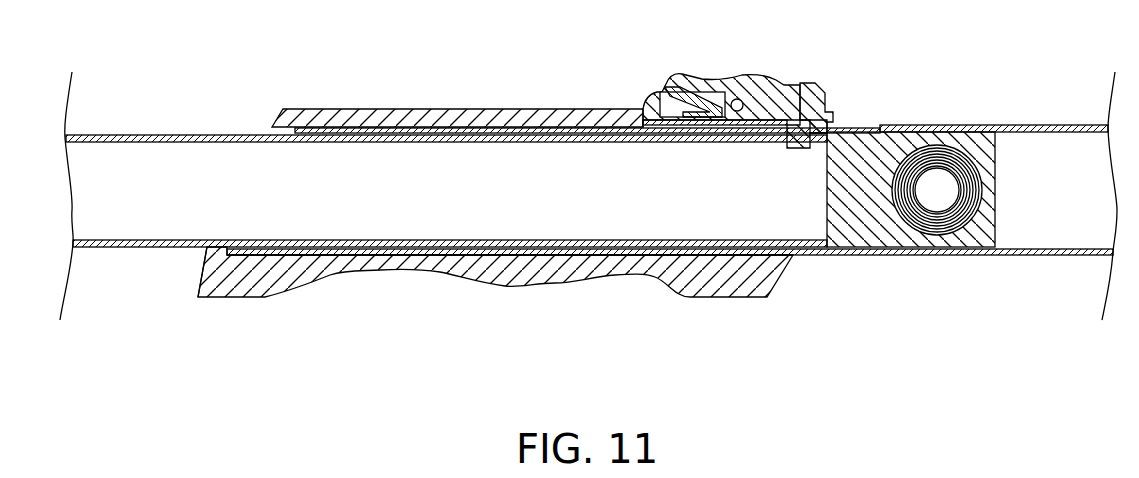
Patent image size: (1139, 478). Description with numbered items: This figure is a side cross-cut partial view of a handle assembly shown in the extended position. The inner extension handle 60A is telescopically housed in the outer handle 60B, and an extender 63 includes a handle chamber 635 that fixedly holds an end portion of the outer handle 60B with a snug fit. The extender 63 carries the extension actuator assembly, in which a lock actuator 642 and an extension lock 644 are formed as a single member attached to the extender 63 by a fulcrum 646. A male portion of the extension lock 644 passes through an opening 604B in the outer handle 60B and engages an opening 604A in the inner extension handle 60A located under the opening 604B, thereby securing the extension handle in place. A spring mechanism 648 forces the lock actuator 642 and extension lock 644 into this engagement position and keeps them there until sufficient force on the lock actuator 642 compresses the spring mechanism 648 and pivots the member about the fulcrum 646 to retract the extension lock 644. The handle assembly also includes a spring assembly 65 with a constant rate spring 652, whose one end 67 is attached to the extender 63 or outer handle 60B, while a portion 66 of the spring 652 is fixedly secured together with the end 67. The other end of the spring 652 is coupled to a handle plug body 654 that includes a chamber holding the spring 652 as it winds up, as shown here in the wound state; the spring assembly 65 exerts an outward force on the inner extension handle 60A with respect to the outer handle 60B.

The inner extension handle 60A is at (366, 215).
The outer handle 60B is at (519, 132).
The handle chamber 635 is at (408, 138).
The extender 63 is at (448, 278).
The portion of the spring 66 is at (610, 247).
The end of the spring 67 is at (209, 250).
The lock actuator 642 is at (790, 85).
The fulcrum 646 is at (740, 100).
The spring mechanism 648 is at (700, 102).
The opening in the inner extension handle 604A is at (812, 143).
The opening in the outer handle 604B is at (823, 118).
The extension lock 644 is at (888, 155).
The handle plug body 654 is at (943, 128).
The spring assembly 65 is at (913, 225).
The constant rate spring 652 is at (935, 228).